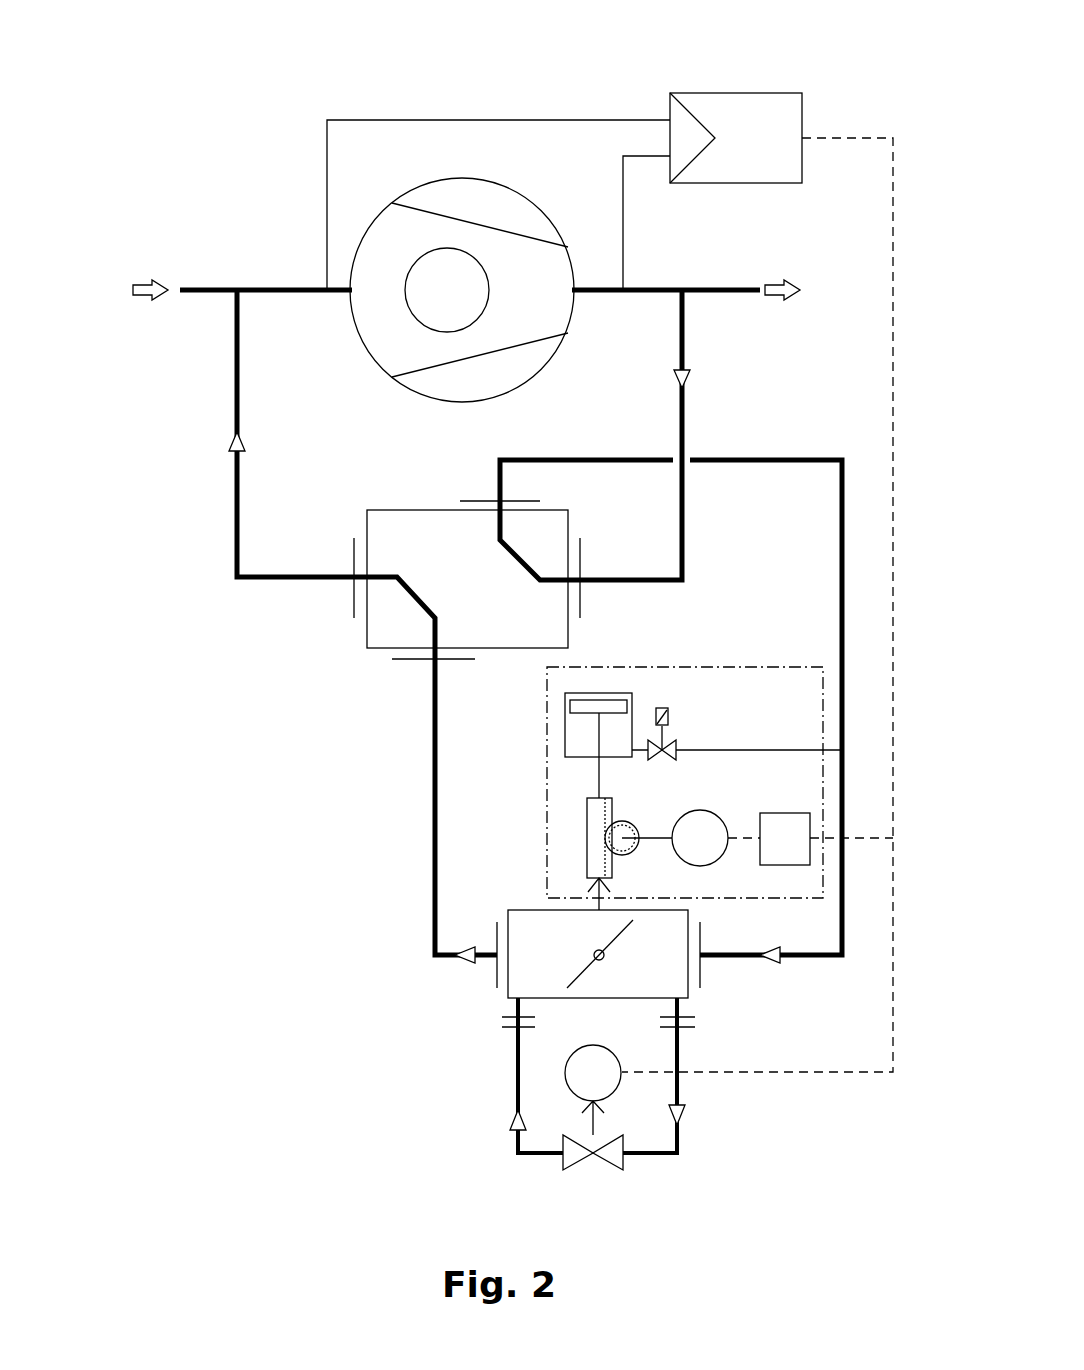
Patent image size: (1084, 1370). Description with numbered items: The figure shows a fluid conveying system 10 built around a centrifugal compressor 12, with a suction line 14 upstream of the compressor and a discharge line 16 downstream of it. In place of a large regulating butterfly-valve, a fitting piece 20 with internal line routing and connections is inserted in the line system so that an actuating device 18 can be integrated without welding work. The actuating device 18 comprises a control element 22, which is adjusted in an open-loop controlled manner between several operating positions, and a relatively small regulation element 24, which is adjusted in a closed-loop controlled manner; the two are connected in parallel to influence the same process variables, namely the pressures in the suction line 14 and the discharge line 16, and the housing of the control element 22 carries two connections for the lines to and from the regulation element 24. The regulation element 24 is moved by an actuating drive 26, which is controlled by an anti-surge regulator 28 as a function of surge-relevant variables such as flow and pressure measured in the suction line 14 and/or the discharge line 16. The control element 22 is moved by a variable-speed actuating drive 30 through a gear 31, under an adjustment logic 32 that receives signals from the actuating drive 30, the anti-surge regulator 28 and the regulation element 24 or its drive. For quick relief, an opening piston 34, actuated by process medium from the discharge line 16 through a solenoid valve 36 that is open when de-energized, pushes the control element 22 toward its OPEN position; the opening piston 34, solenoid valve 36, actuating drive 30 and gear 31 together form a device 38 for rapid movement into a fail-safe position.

The fluid conveying system 10 is at (192, 136).
The centrifugal compressor 12 is at (389, 332).
The suction line 14 is at (213, 287).
The discharge line 16 is at (720, 293).
The actuating device 18 is at (477, 1085).
The fitting piece 20 is at (343, 648).
The control element 22 is at (662, 978).
The regulation element 24 is at (626, 1179).
The actuating drive 26 is at (580, 1070).
The anti-surge regulator 28 is at (735, 107).
The variable-speed actuating drive 30 is at (692, 833).
The gear 31 is at (575, 829).
The adjustment logic 32 is at (803, 857).
The opening piston 34 is at (599, 705).
The solenoid valve 36 is at (690, 731).
The device for rapid movement 38 is at (654, 746).